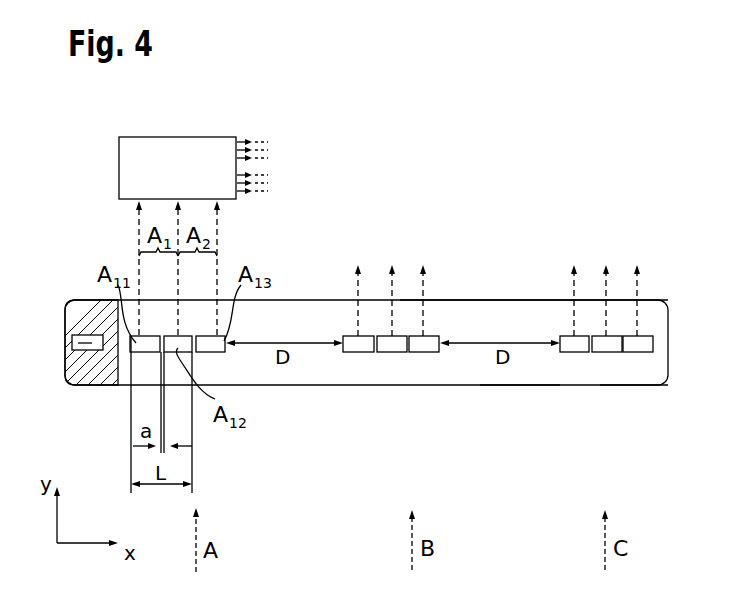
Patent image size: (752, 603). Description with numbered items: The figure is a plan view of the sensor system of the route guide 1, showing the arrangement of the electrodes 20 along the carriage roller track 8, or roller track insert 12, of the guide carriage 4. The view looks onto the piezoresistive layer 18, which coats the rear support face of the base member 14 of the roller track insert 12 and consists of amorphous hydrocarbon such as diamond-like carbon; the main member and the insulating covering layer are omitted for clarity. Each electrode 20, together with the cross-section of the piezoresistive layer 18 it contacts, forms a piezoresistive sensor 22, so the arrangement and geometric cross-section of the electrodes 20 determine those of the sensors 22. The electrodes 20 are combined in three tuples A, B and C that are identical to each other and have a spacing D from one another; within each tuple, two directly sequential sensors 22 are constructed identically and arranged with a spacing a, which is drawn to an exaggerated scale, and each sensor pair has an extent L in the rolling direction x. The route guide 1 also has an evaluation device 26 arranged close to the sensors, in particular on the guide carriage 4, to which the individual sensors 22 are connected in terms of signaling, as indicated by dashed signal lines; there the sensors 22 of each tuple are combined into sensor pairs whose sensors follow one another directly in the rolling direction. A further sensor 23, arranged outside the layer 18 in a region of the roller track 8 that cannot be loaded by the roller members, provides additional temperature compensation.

The route guide 1 is at (634, 185).
The guide carriage 4 is at (565, 200).
The carriage roller track 8 is at (299, 258).
The roller track insert 12 is at (299, 258).
The base member 14 is at (445, 299).
The piezoresistive layer 18 is at (511, 312).
The electrodes 20 is at (360, 353).
The piezoresistive sensor 22 is at (360, 353).
The sensor 23 is at (92, 343).
The evaluation device 26 is at (180, 152).